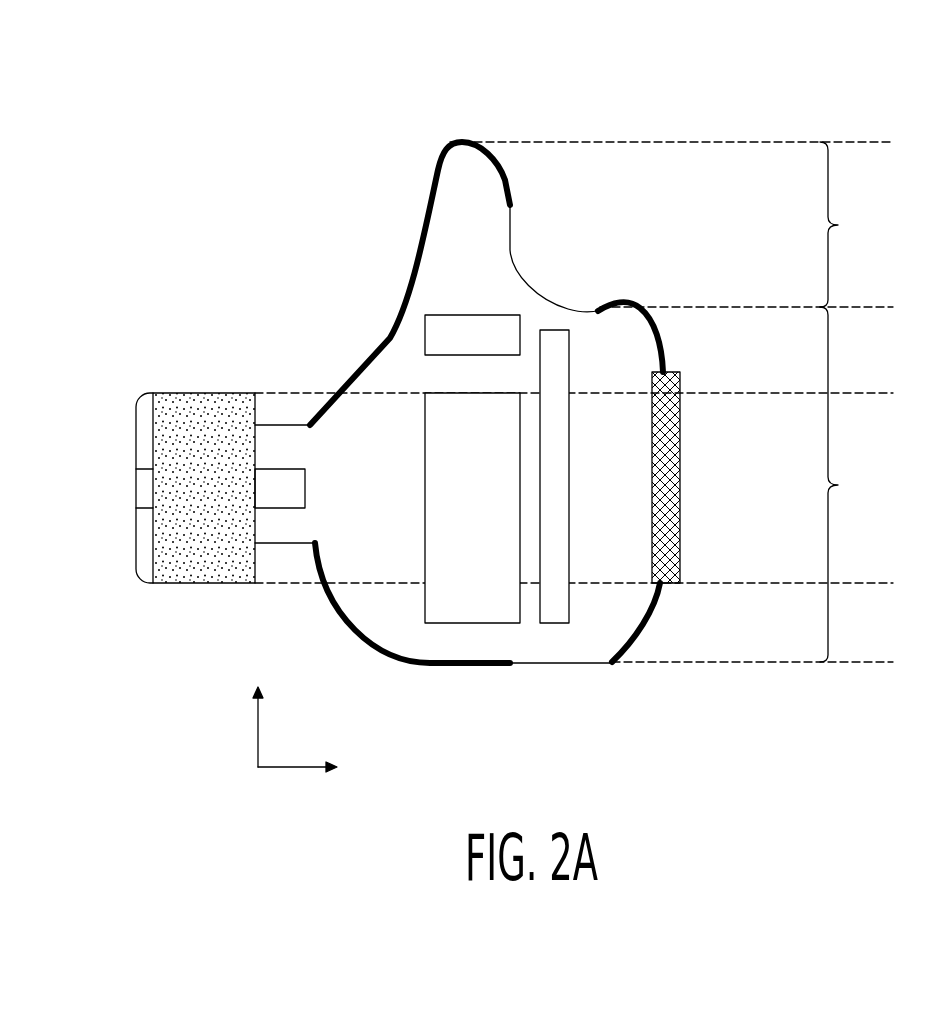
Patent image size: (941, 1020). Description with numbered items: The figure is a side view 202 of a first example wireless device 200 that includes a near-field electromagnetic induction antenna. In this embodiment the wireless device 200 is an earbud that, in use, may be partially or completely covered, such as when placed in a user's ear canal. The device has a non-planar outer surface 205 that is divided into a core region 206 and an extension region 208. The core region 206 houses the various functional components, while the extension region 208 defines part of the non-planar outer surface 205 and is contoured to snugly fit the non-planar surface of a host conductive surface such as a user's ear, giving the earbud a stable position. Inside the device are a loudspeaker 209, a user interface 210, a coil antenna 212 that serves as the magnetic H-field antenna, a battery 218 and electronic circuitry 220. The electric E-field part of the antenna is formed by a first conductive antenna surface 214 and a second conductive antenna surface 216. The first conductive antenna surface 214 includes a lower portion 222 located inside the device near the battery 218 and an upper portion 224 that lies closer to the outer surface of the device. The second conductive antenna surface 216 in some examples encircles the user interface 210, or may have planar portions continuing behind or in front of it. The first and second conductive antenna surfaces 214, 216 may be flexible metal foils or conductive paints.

The wireless device 200 is at (149, 126).
The side view 202 is at (258, 730).
The non-planar outer surface 205 is at (510, 257).
The core region 206 is at (851, 484).
The extension region 208 is at (851, 224).
The loudspeaker 209 is at (193, 393).
The user interface 210 is at (680, 470).
The coil antenna 212 is at (467, 313).
The first conductive antenna surface 214 is at (508, 178).
The second conductive antenna surface 216 is at (632, 302).
The battery 218 is at (490, 515).
The electronic circuitry 220 is at (556, 495).
The lower portion 222 is at (453, 665).
The upper portion 224 is at (450, 138).